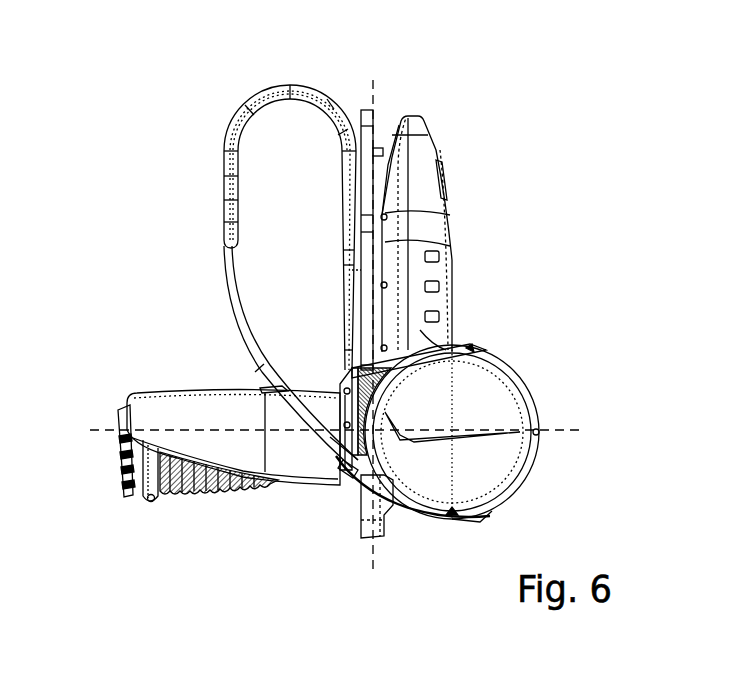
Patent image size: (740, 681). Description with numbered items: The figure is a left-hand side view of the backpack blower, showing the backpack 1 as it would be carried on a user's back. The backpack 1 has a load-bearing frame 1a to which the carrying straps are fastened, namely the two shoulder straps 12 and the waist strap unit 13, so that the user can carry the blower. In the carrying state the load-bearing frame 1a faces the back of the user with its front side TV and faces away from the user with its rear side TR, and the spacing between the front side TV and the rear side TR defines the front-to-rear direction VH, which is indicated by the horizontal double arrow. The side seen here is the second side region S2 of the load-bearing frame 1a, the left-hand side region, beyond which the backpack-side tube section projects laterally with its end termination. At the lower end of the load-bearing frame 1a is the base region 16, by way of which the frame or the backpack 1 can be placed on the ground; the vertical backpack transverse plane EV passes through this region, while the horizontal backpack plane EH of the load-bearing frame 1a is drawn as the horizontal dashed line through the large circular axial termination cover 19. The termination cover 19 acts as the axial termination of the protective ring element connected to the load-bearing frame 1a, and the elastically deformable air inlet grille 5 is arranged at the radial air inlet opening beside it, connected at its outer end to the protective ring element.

The backpack 1 is at (178, 154).
The load-bearing frame 1a is at (369, 110).
The air inlet grille 5 is at (365, 378).
The shoulder straps 12 is at (232, 277).
The waist strap unit 13 is at (165, 410).
The base region 16 is at (370, 510).
The axial termination cover 19 is at (507, 390).
The second side region S2 is at (358, 276).
The front side TV is at (362, 118).
The rear side TR is at (375, 124).
The front-to-rear direction VH is at (85, 277).
The horizontal backpack plane EH is at (92, 430).
The vertical backpack transverse plane EV is at (375, 553).